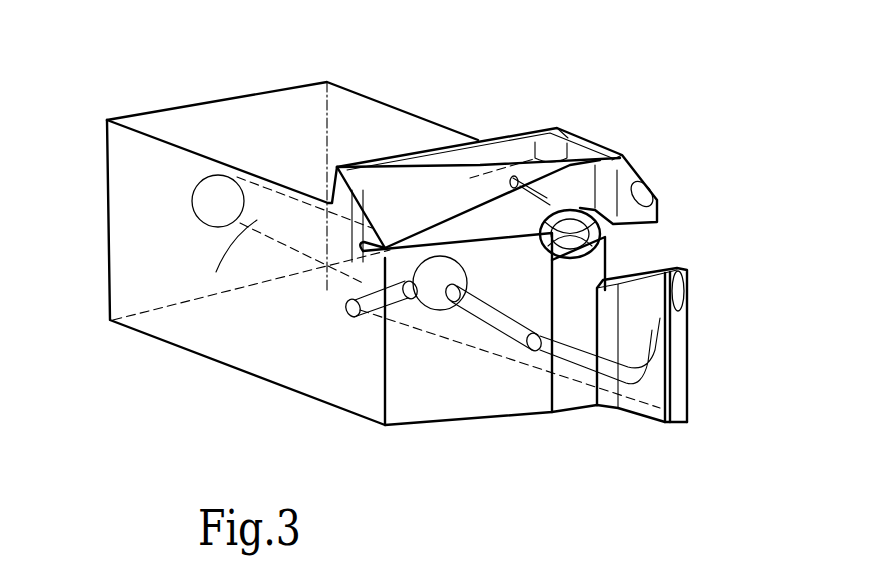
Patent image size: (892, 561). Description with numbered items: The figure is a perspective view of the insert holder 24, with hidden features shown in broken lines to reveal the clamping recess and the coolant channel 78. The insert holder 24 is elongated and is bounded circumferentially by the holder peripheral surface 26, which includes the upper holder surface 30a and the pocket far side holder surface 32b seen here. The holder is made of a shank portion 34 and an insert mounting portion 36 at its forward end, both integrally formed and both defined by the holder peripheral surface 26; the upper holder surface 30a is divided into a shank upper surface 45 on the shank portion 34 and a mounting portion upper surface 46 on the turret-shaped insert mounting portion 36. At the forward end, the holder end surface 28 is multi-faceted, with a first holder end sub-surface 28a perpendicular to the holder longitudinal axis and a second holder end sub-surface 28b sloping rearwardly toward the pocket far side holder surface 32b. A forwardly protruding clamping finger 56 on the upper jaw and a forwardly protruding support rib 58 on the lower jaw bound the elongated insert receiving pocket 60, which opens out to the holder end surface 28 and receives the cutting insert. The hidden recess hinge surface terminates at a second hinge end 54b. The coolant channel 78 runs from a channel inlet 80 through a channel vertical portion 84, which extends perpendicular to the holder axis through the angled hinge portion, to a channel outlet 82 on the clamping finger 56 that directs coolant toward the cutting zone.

The insert holder 24 is at (497, 72).
The holder peripheral surface 26 is at (233, 345).
The holder end surface 28 is at (482, 350).
The first holder end sub-surface 28a is at (578, 264).
The second holder end sub-surface 28b is at (456, 329).
The upper holder surface 30a is at (217, 142).
The pocket far side holder surface 32b is at (133, 220).
The shank portion 34 is at (357, 130).
The insert mounting portion 36 is at (628, 88).
The shank upper surface 45 is at (230, 115).
The mounting portion upper surface 46 is at (536, 122).
The second hinge end 54b is at (338, 260).
The clamping finger 56 is at (695, 130).
The support rib 58 is at (720, 332).
The insert receiving pocket 60 is at (654, 247).
The coolant channel 78 is at (230, 257).
The channel inlet 80 is at (215, 201).
The channel outlet 82 is at (660, 185).
The channel vertical portion 84 is at (357, 232).